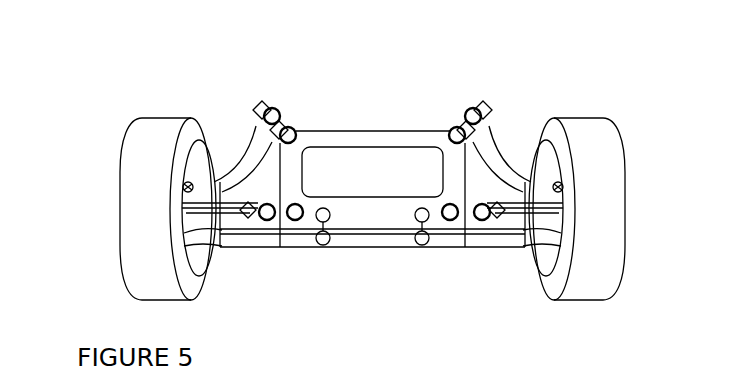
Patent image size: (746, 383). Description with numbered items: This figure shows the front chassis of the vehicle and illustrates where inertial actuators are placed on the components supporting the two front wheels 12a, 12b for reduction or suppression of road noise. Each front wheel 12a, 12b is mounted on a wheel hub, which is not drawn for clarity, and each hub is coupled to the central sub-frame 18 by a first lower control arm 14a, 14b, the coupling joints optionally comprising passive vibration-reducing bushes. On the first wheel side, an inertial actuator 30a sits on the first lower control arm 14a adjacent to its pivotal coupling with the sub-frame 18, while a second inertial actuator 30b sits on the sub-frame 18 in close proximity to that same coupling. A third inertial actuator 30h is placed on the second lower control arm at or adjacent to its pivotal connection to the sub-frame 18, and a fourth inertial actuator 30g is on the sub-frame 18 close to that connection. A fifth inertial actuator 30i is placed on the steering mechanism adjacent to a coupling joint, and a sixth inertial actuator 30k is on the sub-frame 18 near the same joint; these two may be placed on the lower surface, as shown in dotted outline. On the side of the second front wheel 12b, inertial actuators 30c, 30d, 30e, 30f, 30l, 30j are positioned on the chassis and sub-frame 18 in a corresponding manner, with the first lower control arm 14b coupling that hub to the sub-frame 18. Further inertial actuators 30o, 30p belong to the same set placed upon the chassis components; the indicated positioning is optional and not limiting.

The front wheel 12a is at (120, 245).
The front wheel 12b is at (625, 192).
The first lower control arm 14a is at (236, 172).
The first lower control arm 14b is at (508, 170).
The sub-frame 18 is at (382, 131).
The inertial actuator 30a is at (264, 109).
The inertial actuator 30b is at (288, 126).
The inertial actuator 30c is at (470, 108).
The inertial actuator 30d is at (449, 132).
The inertial actuator 30e is at (484, 221).
The inertial actuator 30f is at (452, 221).
The inertial actuator 30g is at (295, 221).
The inertial actuator 30h is at (265, 221).
The inertial actuator 30i is at (327, 250).
The inertial actuator 30j is at (418, 245).
The inertial actuator 30k is at (316, 208).
The inertial actuator 30l is at (421, 208).
The inertial actuator 30o is at (438, 373).
The inertial actuator 30p is at (356, 373).